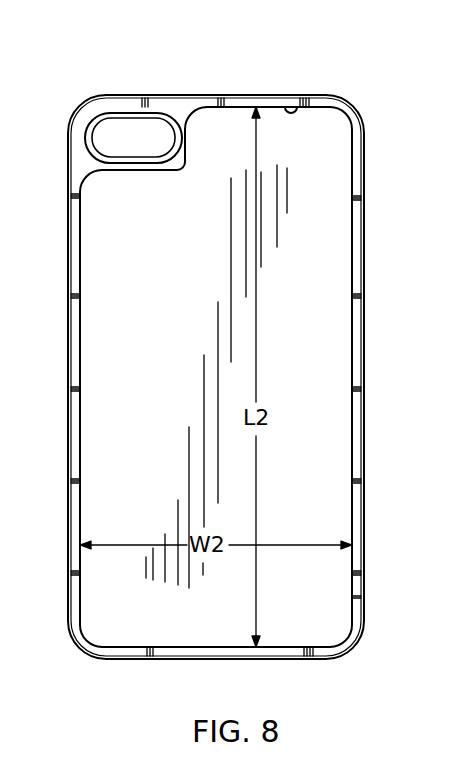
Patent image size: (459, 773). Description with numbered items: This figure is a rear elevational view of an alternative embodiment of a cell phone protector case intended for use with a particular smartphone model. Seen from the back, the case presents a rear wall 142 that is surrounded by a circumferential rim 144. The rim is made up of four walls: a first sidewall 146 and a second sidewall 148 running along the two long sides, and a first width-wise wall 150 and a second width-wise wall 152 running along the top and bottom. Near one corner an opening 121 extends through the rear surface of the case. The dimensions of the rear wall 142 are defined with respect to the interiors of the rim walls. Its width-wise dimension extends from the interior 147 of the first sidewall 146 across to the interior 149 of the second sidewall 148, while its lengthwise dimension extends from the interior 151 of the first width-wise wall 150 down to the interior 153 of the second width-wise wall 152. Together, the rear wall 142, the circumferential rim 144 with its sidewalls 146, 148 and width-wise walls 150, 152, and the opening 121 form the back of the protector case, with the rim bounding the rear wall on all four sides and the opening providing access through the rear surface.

The opening 121 is at (117, 130).
The rear wall 142 is at (203, 296).
The circumferential rim 144 is at (348, 169).
The first sidewall 146 is at (70, 350).
The interior of first sidewall 147 is at (84, 400).
The second sidewall 148 is at (365, 344).
The interior of second sidewall 149 is at (348, 594).
The first width-wise wall 150 is at (232, 98).
The interior of first width-wise wall 151 is at (298, 107).
The second width-wise wall 152 is at (160, 659).
The interior of second width-wise wall 153 is at (294, 640).